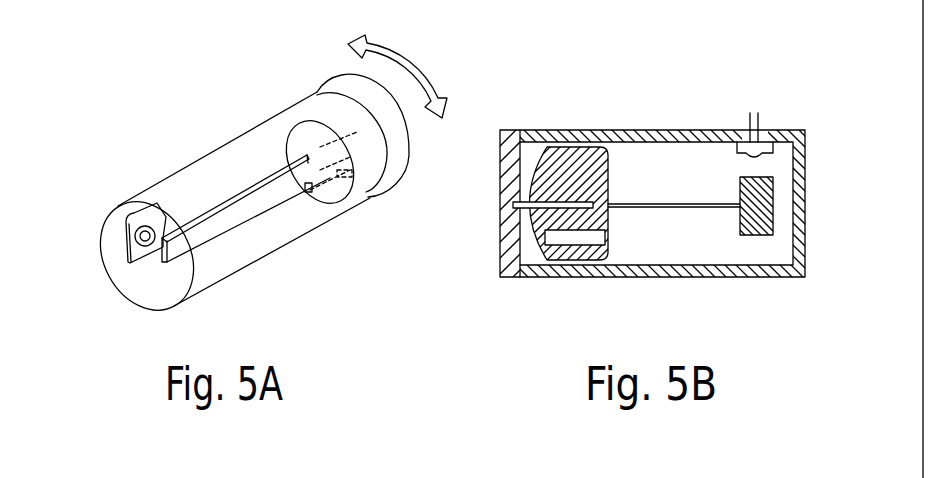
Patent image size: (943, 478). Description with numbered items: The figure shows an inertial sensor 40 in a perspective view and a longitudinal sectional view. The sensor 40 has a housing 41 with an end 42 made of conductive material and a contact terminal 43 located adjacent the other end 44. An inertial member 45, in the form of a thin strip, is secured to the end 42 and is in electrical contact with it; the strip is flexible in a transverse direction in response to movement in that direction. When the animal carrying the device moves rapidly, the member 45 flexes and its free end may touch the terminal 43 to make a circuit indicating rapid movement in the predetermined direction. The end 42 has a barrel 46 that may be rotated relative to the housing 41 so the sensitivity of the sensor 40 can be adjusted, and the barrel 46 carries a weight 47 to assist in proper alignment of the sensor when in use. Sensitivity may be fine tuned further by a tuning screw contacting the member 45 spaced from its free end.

In FIG. 5A, the sensor 40 is at (271, 80).
In FIG. 5A, the housing 41 is at (183, 166).
In FIG. 5A, the end 42 is at (404, 158).
In FIG. 5B, the end 42 is at (500, 265).
In FIG. 5A, the contact terminal 43 is at (132, 250).
In FIG. 5B, the contact terminal 43 is at (768, 136).
In FIG. 5A, the other end 44 is at (163, 293).
In FIG. 5B, the other end 44 is at (828, 213).
In FIG. 5A, the inertial member 45 is at (245, 207).
In FIG. 5B, the inertial member 45 is at (683, 205).
In FIG. 5B, the barrel 46 is at (572, 143).
In FIG. 5B, the weight 47 is at (580, 236).